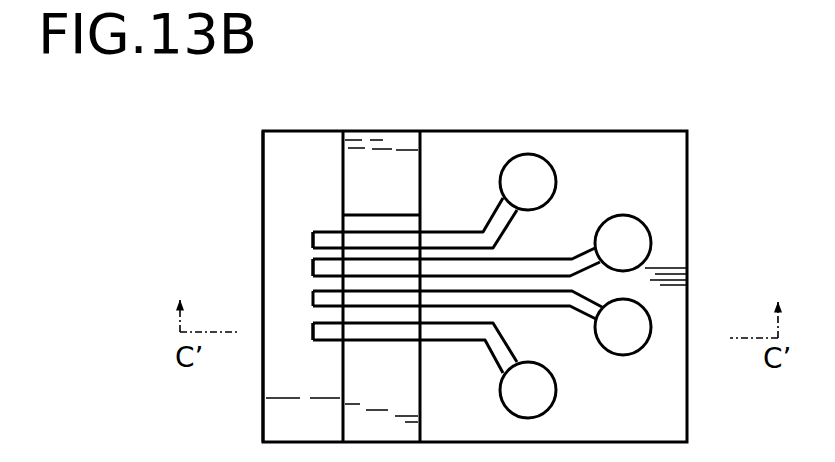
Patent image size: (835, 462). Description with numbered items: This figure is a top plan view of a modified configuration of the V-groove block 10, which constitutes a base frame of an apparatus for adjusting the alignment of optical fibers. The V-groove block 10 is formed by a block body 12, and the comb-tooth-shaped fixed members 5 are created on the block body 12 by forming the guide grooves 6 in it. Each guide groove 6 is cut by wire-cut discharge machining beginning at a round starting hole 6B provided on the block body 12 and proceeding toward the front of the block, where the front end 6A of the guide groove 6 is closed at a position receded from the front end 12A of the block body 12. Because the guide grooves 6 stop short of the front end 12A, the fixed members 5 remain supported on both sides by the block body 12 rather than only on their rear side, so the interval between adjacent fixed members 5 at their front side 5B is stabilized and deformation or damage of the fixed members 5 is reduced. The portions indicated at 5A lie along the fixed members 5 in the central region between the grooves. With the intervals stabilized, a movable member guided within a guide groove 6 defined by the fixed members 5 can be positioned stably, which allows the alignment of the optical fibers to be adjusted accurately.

The V-groove block 10 is at (653, 120).
The block body 12 is at (303, 150).
The front end of block body 12A is at (259, 176).
The fixed member 5 is at (382, 252).
The groove portion 5A is at (409, 250).
The front side of fixed member 5B is at (313, 316).
The guide groove 6 is at (355, 270).
The front end of guide groove 6A is at (310, 267).
The starting hole 6B is at (544, 178).